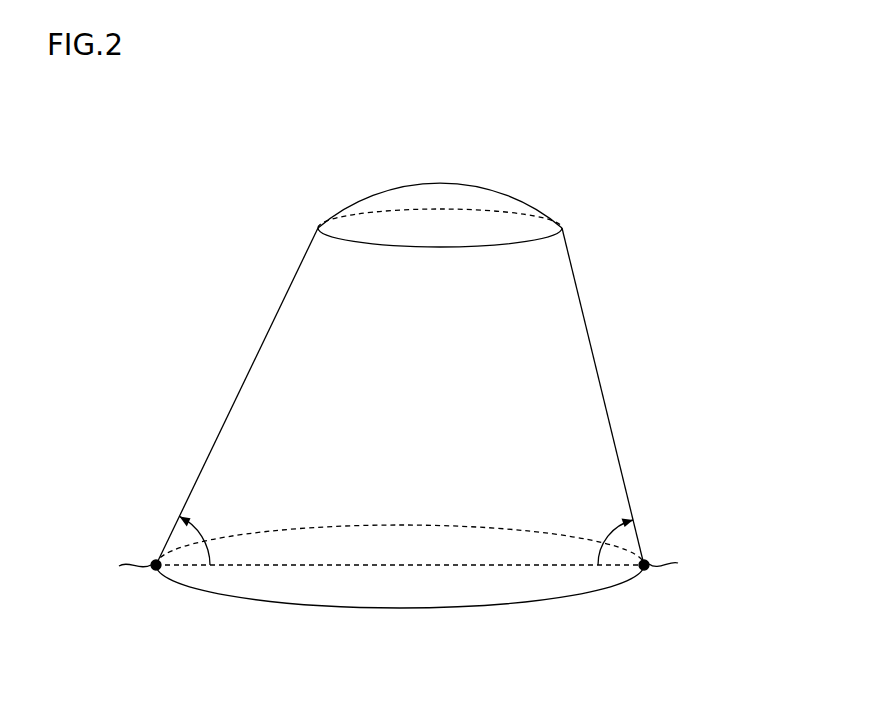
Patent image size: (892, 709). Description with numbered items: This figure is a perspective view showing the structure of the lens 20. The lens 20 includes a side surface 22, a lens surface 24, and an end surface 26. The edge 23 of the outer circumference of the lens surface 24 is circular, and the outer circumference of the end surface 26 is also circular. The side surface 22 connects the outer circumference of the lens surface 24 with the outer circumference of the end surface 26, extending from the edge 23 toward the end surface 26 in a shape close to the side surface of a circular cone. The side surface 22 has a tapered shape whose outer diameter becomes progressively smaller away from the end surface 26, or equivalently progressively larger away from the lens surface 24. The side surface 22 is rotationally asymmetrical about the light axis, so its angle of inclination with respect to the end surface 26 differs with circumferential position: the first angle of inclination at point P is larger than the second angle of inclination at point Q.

The lens 20 is at (395, 383).
The side surface 22 is at (258, 352).
The edge of the outer circumference of the lens surface 23 is at (364, 246).
The lens surface 24 is at (432, 184).
The end surface 26 is at (366, 608).